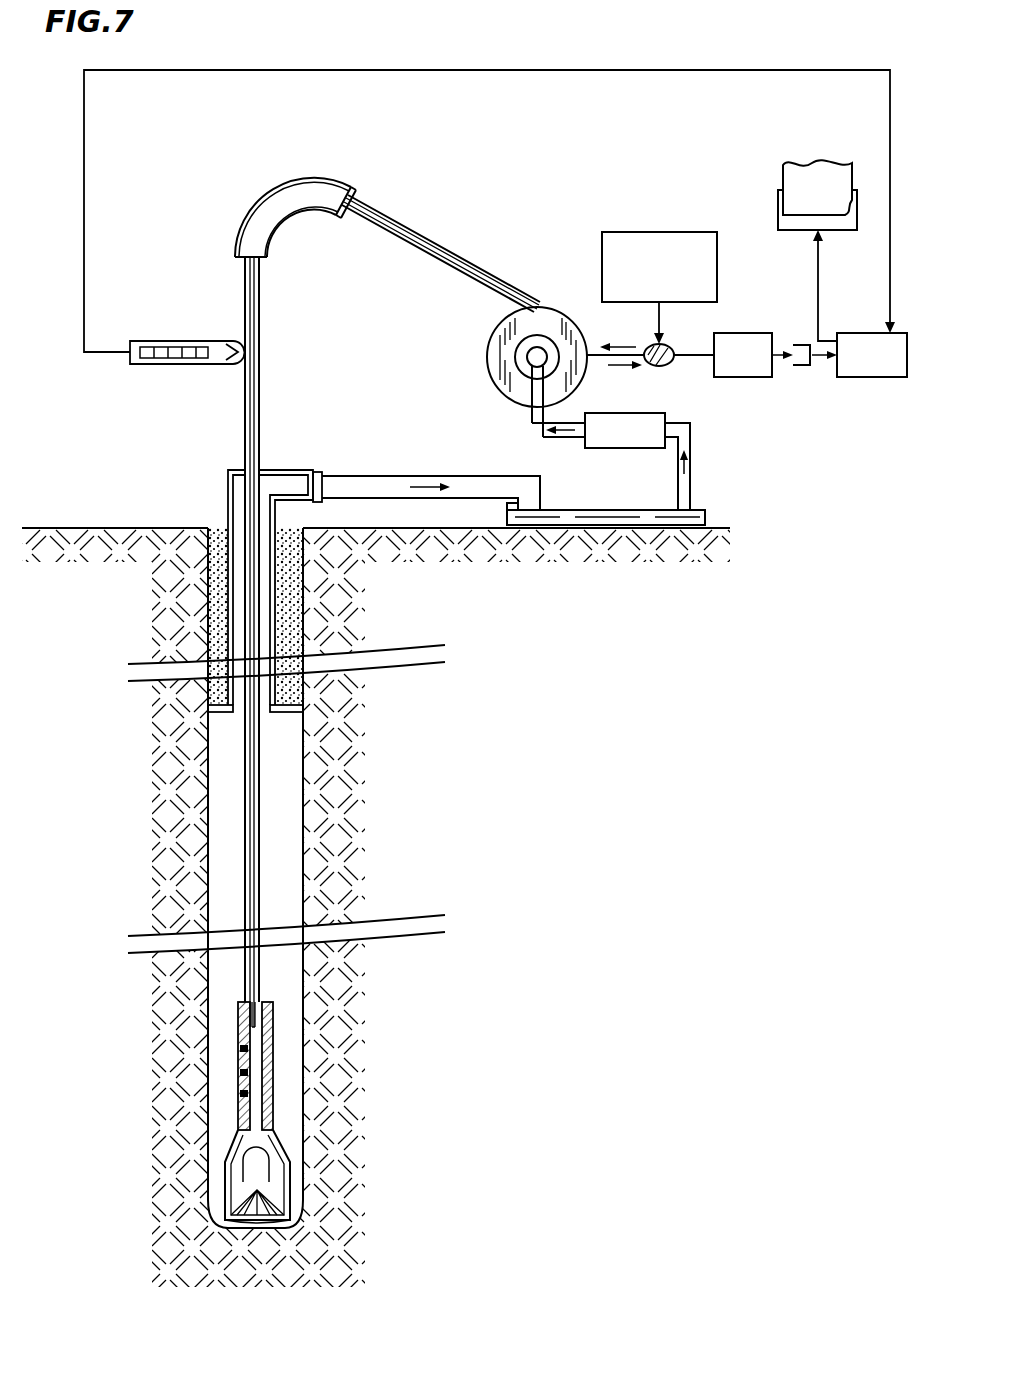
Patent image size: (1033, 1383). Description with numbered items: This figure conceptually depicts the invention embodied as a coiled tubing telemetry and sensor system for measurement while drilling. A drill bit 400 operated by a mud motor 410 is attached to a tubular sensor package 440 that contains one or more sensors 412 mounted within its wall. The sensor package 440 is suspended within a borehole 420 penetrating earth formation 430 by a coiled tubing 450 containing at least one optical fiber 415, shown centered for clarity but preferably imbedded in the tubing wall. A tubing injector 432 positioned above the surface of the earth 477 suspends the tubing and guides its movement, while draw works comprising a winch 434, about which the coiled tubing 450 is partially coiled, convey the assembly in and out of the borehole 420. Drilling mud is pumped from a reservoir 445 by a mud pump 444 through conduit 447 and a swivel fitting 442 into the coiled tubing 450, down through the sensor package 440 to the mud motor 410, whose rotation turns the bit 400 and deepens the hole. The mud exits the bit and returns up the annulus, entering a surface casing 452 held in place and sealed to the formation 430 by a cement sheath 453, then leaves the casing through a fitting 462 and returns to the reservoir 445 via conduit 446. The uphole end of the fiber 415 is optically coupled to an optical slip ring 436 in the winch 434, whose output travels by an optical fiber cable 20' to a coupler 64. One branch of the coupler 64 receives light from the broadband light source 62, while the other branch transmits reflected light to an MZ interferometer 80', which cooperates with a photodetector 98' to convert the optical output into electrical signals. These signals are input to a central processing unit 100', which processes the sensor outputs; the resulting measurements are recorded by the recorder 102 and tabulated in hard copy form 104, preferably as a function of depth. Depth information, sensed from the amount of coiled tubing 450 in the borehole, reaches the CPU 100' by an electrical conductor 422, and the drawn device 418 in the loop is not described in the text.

The electrical conductor 422 is at (398, 70).
The tubing injector 432 is at (263, 196).
The optical fiber 415 is at (424, 240).
The coiled tubing 450 is at (505, 284).
The winch 434 is at (566, 322).
The optical slip ring 436 is at (520, 360).
The swivel fitting 442 is at (527, 366).
The conduit 447 is at (532, 425).
The mud pump 444 is at (625, 448).
The reservoir 445 is at (705, 516).
The conduit 446 is at (437, 476).
The fitting 462 is at (316, 470).
The surface of the earth 477 is at (124, 528).
The control device 418 is at (192, 364).
The broadband light source 62 is at (648, 232).
The coupler 64 is at (667, 364).
The optical fiber cable 20' is at (615, 371).
The MZ interferometer 80' is at (753, 376).
The photodetector 98' is at (815, 384).
The central processing unit 100' is at (860, 332).
The recorder 102 is at (778, 212).
The hard copy form 104 is at (788, 164).
The cement sheath 453 is at (205, 590).
The surface casing 452 is at (212, 698).
The borehole 420 is at (215, 982).
The sensors 412 is at (240, 1093).
The sensor package 440 is at (273, 1065).
The mud motor 410 is at (275, 1150).
The drill bit 400 is at (280, 1224).
The earth formation 430 is at (493, 1040).